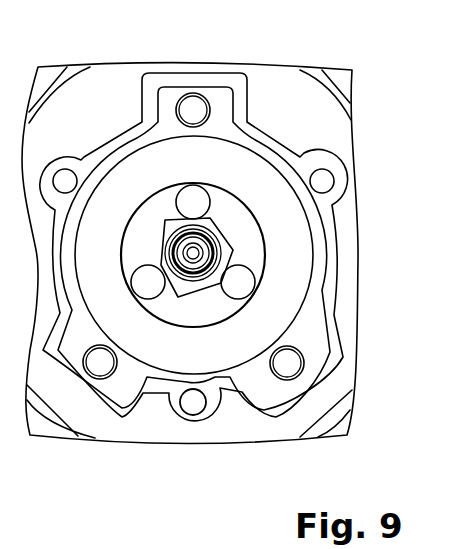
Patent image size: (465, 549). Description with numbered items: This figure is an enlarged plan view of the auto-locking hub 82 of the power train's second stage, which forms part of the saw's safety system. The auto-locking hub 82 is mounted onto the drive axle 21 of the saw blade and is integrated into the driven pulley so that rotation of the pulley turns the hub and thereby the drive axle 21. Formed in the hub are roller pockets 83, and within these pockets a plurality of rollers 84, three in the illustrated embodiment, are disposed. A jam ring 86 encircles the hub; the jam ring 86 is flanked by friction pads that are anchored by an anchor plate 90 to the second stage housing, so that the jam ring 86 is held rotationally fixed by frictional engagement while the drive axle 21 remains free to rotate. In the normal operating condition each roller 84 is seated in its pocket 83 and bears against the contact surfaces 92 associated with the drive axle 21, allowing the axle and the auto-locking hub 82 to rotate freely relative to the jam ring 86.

The saw blade drive axle 21 is at (213, 250).
The auto-locking hub 82 is at (144, 210).
The roller pockets 83 is at (246, 287).
The rollers 84 is at (272, 180).
The jam ring 86 is at (296, 156).
The anchor plate 90 is at (218, 98).
The contact surfaces 92 is at (185, 300).